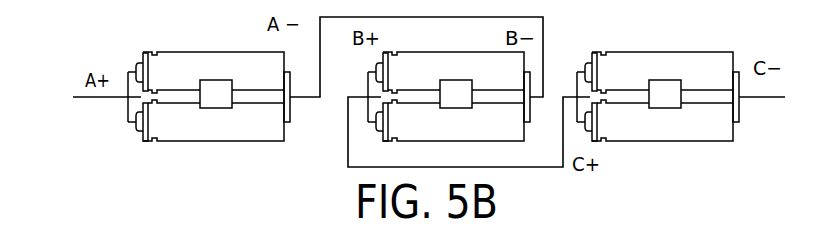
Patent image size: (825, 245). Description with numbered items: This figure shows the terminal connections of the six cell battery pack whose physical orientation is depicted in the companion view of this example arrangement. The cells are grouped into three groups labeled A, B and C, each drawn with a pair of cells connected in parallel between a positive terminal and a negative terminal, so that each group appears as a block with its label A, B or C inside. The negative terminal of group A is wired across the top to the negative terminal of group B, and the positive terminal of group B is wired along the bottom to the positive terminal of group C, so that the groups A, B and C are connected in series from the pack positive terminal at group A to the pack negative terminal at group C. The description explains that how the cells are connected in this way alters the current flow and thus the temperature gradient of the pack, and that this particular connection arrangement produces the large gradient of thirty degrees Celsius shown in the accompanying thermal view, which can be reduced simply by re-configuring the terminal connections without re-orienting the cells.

The cell group A is at (209, 96).
The cell group B is at (449, 96).
The cell group C is at (658, 96).